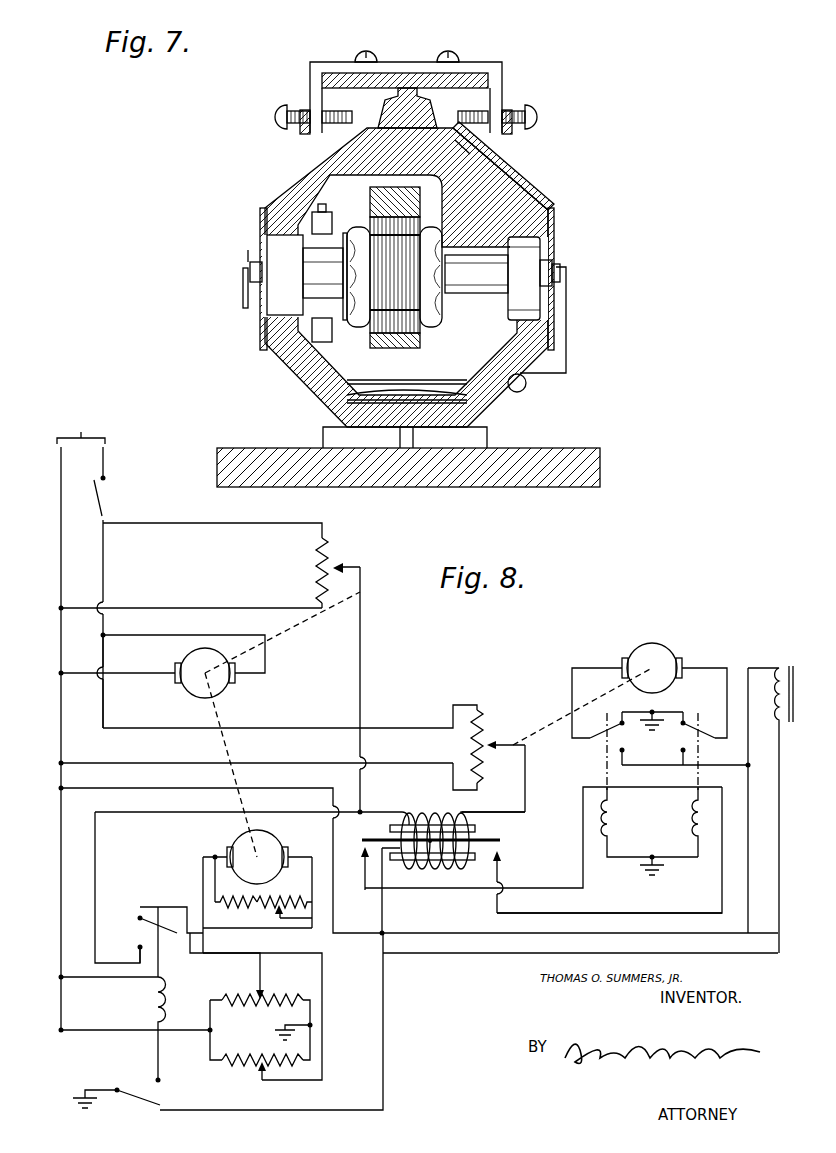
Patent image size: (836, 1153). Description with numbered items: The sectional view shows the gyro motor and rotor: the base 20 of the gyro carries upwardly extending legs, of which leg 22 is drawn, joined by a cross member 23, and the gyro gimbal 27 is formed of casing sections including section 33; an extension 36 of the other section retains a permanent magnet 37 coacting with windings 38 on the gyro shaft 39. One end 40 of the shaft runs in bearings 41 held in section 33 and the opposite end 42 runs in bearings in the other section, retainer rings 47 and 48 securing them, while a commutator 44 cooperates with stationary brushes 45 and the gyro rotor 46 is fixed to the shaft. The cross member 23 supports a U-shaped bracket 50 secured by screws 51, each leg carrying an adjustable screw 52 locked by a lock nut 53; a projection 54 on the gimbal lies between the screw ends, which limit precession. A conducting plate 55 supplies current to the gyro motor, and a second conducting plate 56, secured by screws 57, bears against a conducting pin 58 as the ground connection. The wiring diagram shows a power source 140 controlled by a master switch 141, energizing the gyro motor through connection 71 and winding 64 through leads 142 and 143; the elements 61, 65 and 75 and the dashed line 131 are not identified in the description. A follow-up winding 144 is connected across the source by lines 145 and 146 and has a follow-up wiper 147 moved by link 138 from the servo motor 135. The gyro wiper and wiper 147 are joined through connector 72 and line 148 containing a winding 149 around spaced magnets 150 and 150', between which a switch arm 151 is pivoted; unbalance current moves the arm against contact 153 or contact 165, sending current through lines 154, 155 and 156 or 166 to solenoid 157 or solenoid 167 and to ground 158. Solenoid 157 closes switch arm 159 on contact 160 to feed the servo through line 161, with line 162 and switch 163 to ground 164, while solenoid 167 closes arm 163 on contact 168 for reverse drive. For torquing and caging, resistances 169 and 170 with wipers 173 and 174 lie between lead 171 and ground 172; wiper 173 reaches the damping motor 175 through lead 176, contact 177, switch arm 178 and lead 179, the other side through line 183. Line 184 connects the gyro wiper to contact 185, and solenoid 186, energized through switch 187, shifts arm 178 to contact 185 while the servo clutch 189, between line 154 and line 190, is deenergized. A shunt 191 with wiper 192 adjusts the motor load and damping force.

In FIG. 7, the base 20 is at (548, 460).
In FIG. 7, the leg 22 is at (488, 430).
In FIG. 7, the cross member 23 is at (334, 73).
In FIG. 7, the gyro gimbal 27 is at (290, 378).
In FIG. 8, the gyro gimbal 27 is at (234, 690).
In FIG. 7, the casing section 33 is at (505, 170).
In FIG. 7, the extension 36 is at (326, 210).
In FIG. 7, the permanent magnet 37 is at (394, 267).
In FIG. 7, the windings 38 is at (420, 333).
In FIG. 7, the shaft 39 is at (476, 274).
In FIG. 7, the shaft end 40 is at (552, 268).
In FIG. 7, the bearings 41 is at (535, 298).
In FIG. 7, the shaft end 42 is at (262, 250).
In FIG. 7, the commutator 44 is at (323, 273).
In FIG. 7, the stationary brushes 45 is at (312, 222).
In FIG. 7, the gyro rotor 46 is at (472, 156).
In FIG. 7, the retainer ring 47 is at (554, 220).
In FIG. 7, the retainer ring 48 is at (260, 216).
In FIG. 7, the U-shaped bracket 50 is at (403, 62).
In FIG. 7, the screws 51 is at (370, 52).
In FIG. 7, the adjustable screw 52 is at (276, 104).
In FIG. 7, the lock nut 53 is at (302, 110).
In FIG. 7, the projection 54 is at (420, 110).
In FIG. 7, the conducting plate 55 is at (221, 288).
In FIG. 7, the second conducting plate 56 is at (566, 326).
In FIG. 7, the screws 57 is at (526, 386).
In FIG. 7, the conducting pin 58 is at (560, 274).
In FIG. 8, the gyro precession axis 61 is at (285, 635).
In FIG. 8, the winding 64 is at (330, 546).
In FIG. 8, the wiper 65 is at (354, 679).
In FIG. 8, the connection 71 is at (150, 635).
In FIG. 8, the connector 72 is at (361, 660).
In FIG. 8, the gyro return lead 75 is at (140, 673).
In FIG. 8, the mechanical link 131 is at (228, 744).
In FIG. 8, the servo motor 135 is at (668, 658).
In FIG. 8, the follow-up link 138 is at (545, 716).
In FIG. 8, the power source 140 is at (81, 720).
In FIG. 8, the master switch 141 is at (104, 500).
In FIG. 8, the lead 142 is at (248, 523).
In FIG. 8, the lead 143 is at (234, 608).
In FIG. 8, the follow-up winding 144 is at (482, 712).
In FIG. 8, the line 145 is at (395, 728).
In FIG. 8, the line 146 is at (378, 763).
In FIG. 8, the follow-up wiper 147 is at (492, 742).
In FIG. 8, the line 148 is at (526, 786).
In FIG. 8, the winding 149 is at (414, 812).
In FIG. 8, the magnet 150 is at (454, 826).
In FIG. 8, the magnet 150' is at (440, 872).
In FIG. 8, the switch arm 151 is at (378, 838).
In FIG. 8, the contact 153 is at (362, 858).
In FIG. 8, the line 154 is at (176, 788).
In FIG. 8, the line 155 is at (383, 914).
In FIG. 8, the line 156 is at (452, 890).
In FIG. 8, the solenoid 157 is at (616, 808).
In FIG. 8, the ground 158 is at (658, 878).
In FIG. 8, the switch arm 159 is at (594, 744).
In FIG. 8, the contact 160 is at (677, 751).
In FIG. 8, the line 161 is at (590, 668).
In FIG. 8, the line 162 is at (710, 668).
In FIG. 8, the switch arm 163 is at (690, 718).
In FIG. 8, the ground 164 is at (652, 739).
In FIG. 8, the contact 165 is at (499, 858).
In FIG. 8, the line 166 is at (612, 913).
In FIG. 8, the solenoid 167 is at (690, 822).
In FIG. 8, the contact 168 is at (684, 752).
In FIG. 8, the resistance 169 is at (298, 1000).
In FIG. 8, the resistance 170 is at (228, 1068).
In FIG. 8, the lead 171 is at (122, 1036).
In FIG. 8, the ground 172 is at (296, 1036).
In FIG. 8, the command wiper 173 is at (263, 990).
In FIG. 8, the trim wiper 174 is at (259, 1075).
In FIG. 8, the damping motor 175 is at (276, 838).
In FIG. 8, the lead 176 is at (186, 957).
In FIG. 8, the contact 177 is at (138, 918).
In FIG. 8, the switch arm 178 is at (160, 910).
In FIG. 8, the lead 179 is at (282, 930).
In FIG. 8, the line 183 is at (323, 1012).
In FIG. 8, the line 184 is at (266, 812).
In FIG. 8, the contact 185 is at (138, 944).
In FIG. 8, the solenoid 186 is at (168, 1000).
In FIG. 8, the switch 187 is at (138, 1098).
In FIG. 8, the solenoid operated clutch 189 is at (778, 668).
In FIG. 8, the line 190 is at (520, 952).
In FIG. 8, the shunt 191 is at (240, 908).
In FIG. 8, the wiper 192 is at (276, 916).